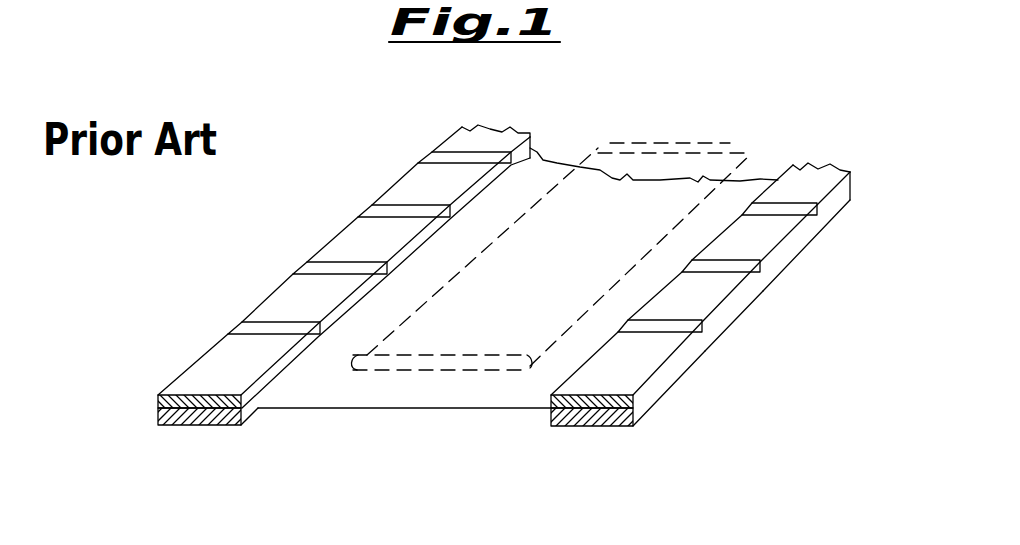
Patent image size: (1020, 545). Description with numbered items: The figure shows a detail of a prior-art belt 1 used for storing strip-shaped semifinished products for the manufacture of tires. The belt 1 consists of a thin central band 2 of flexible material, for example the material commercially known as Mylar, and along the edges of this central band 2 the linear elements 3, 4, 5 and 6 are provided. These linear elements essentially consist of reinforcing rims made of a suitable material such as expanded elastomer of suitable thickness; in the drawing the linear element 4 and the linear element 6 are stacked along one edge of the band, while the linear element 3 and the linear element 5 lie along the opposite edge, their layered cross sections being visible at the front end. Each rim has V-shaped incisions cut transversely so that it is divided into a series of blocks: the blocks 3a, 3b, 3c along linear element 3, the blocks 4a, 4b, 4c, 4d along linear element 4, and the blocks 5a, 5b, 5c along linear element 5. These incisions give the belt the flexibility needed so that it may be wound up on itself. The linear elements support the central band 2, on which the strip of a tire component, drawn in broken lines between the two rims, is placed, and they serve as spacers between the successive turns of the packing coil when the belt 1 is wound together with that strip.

The belt 1 is at (366, 176).
The central band 2 is at (350, 405).
The linear element 3 is at (811, 179).
The block 3a is at (647, 355).
The block 3b is at (727, 288).
The block 3c is at (779, 232).
The linear element 4 is at (489, 137).
The block 4a is at (208, 362).
The block 4b is at (277, 307).
The block 4c is at (335, 253).
The block 4d is at (387, 192).
The linear element 5 is at (672, 163).
The block 5a is at (647, 407).
The block 5b is at (697, 350).
The block 5c is at (781, 262).
The linear element 6 is at (207, 427).